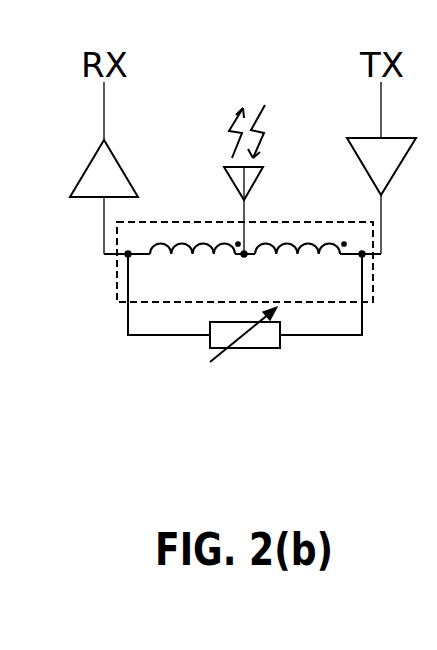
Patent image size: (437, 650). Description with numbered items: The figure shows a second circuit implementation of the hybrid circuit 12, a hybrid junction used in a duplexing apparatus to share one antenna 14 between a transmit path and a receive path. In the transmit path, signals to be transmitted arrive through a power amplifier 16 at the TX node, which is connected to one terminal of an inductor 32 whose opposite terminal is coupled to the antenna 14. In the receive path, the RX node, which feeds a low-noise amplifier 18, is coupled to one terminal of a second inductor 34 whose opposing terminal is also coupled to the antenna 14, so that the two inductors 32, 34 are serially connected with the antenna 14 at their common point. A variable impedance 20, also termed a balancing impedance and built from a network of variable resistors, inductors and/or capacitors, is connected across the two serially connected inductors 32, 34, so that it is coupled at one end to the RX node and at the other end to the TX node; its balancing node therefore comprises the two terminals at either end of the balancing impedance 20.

The hybrid circuit 12 is at (305, 222).
The antenna 14 is at (235, 184).
The power amplifier 16 is at (361, 162).
The low-noise amplifier 18 is at (86, 170).
The variable impedance 20 is at (206, 342).
The inductor 32 is at (297, 257).
The second inductor 34 is at (192, 257).